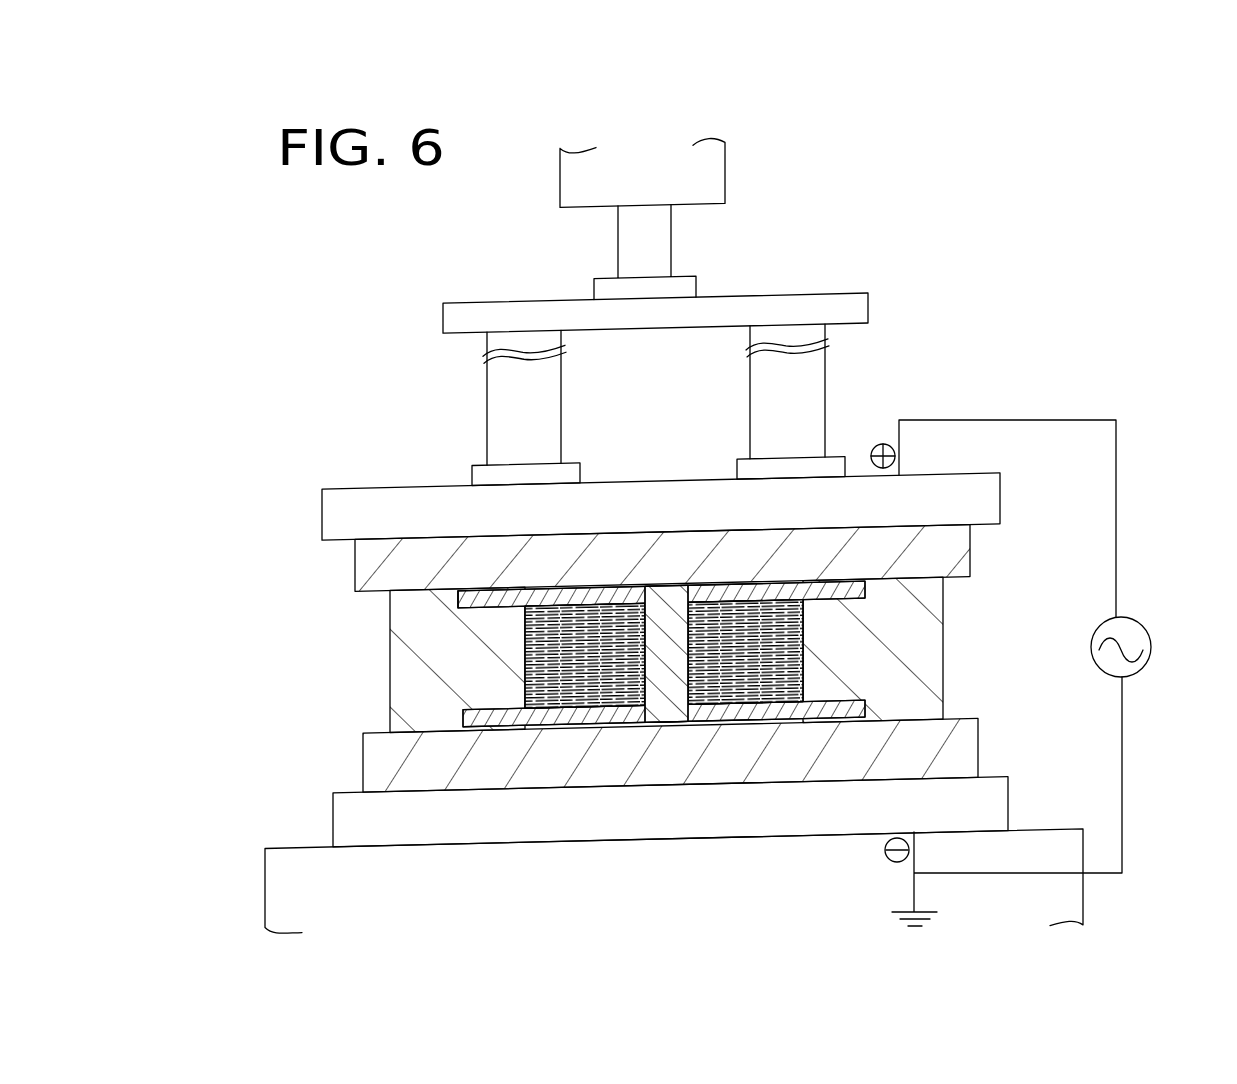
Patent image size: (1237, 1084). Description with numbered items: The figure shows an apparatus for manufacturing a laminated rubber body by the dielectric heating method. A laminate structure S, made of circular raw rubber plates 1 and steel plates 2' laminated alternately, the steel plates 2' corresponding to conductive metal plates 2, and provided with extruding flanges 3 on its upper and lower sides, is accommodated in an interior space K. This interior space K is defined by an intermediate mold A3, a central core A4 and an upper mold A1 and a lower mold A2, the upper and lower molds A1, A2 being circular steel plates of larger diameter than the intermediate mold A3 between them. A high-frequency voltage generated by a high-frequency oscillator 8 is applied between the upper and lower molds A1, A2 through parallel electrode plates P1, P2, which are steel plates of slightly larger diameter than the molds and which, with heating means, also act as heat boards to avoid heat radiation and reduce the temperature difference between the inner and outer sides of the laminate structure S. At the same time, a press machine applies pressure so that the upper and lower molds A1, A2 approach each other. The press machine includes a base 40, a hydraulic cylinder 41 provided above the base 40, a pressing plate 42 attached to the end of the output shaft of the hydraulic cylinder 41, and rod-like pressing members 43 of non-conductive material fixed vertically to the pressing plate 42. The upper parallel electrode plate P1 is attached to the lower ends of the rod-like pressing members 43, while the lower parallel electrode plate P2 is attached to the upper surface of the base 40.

The hydraulic cylinder 41 is at (727, 157).
The pressing plate 42 is at (866, 310).
The rod-like pressing members 43 is at (803, 388).
The parallel electrode plate P1 is at (322, 510).
The upper mold A1 is at (355, 568).
The intermediate mold A3 is at (402, 633).
The interior space K is at (466, 606).
The lower mold A2 is at (363, 748).
The parallel electrode plate P2 is at (333, 818).
The central core A4 is at (648, 728).
The flanges 3 is at (870, 583).
The raw rubber plates 1 is at (806, 648).
The steel plates 2' is at (863, 652).
The conductive metal plates 2 is at (844, 653).
The laminate structure S is at (770, 652).
The high-frequency oscillator 8 is at (1146, 618).
The base 40 is at (1070, 905).